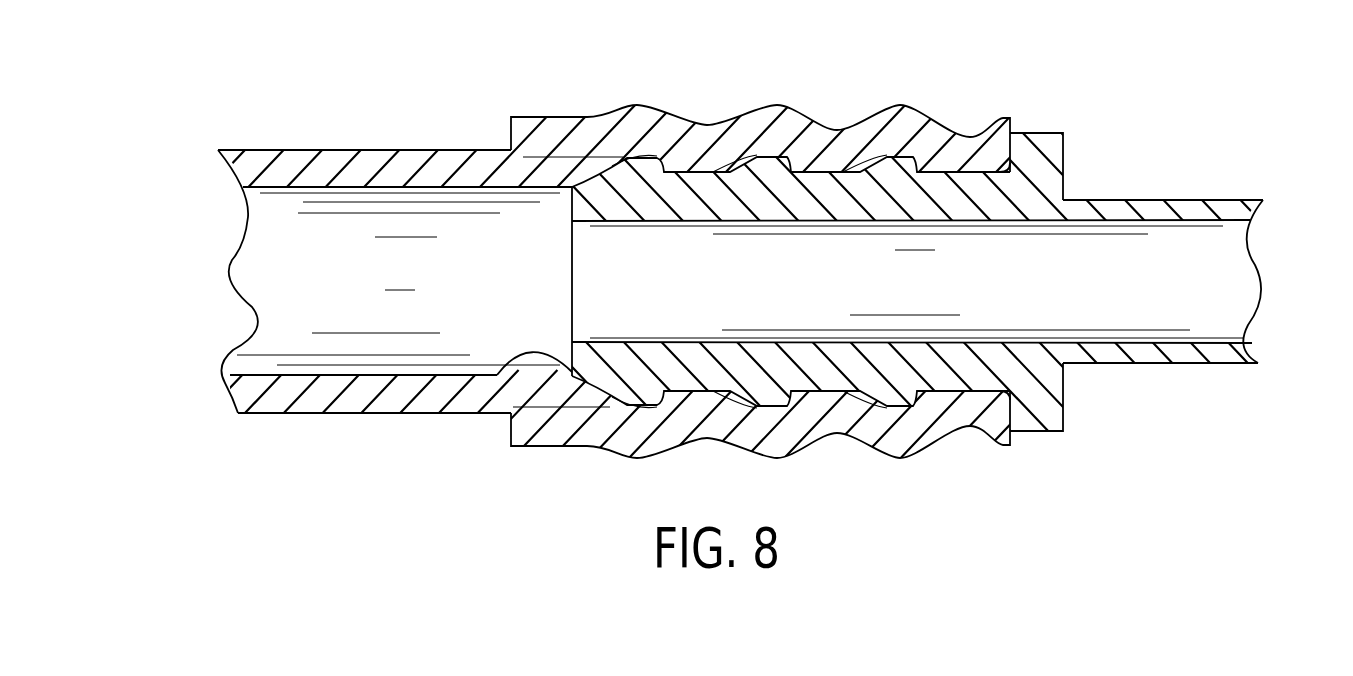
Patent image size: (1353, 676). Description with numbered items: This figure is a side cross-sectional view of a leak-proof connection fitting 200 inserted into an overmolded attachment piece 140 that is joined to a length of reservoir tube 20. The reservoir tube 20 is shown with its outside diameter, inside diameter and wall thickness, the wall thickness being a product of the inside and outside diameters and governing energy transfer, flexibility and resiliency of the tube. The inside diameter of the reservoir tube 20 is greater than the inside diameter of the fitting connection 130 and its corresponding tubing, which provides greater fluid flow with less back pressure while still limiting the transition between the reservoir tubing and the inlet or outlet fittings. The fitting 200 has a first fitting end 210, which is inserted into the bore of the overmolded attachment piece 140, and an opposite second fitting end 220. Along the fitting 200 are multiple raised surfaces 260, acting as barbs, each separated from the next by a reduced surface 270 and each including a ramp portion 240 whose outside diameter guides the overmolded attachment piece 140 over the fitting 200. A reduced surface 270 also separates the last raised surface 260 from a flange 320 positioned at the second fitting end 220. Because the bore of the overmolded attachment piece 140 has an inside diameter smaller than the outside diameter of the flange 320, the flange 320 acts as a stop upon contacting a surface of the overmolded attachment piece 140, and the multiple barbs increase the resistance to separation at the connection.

The reservoir tube 20 is at (340, 160).
The fitting connection 130 is at (1285, 220).
The overmolded attachment piece 140 is at (763, 117).
The leak-proof connection fitting 200 is at (857, 373).
The first fitting end 210 is at (475, 400).
The second fitting end 220 is at (1063, 393).
The ramp portion 240 is at (528, 157).
The raised surface 260 is at (642, 406).
The reduced surface 270 is at (709, 173).
The flange 320 is at (1103, 431).